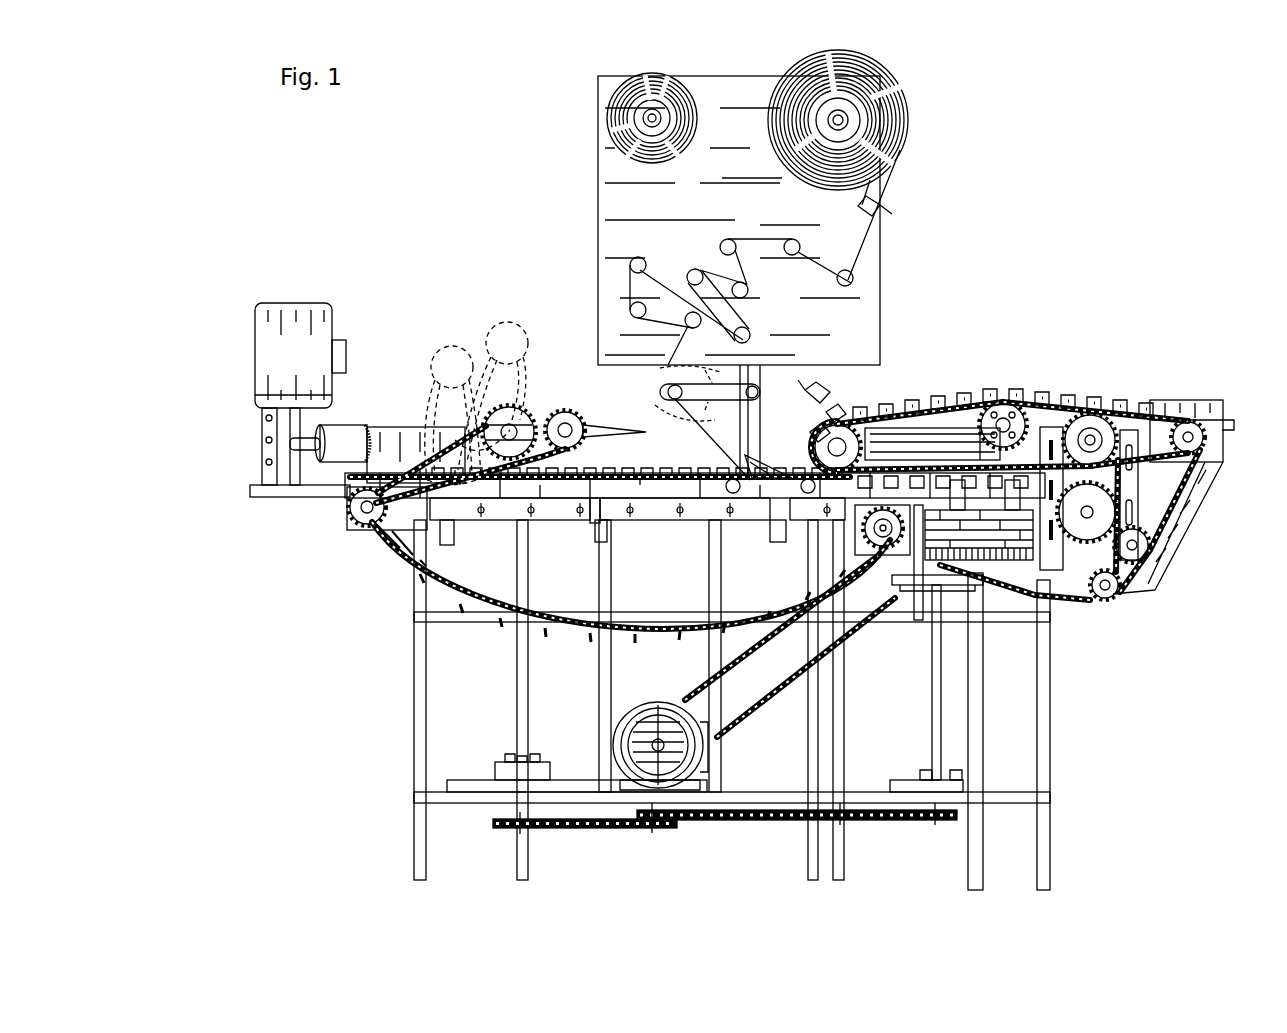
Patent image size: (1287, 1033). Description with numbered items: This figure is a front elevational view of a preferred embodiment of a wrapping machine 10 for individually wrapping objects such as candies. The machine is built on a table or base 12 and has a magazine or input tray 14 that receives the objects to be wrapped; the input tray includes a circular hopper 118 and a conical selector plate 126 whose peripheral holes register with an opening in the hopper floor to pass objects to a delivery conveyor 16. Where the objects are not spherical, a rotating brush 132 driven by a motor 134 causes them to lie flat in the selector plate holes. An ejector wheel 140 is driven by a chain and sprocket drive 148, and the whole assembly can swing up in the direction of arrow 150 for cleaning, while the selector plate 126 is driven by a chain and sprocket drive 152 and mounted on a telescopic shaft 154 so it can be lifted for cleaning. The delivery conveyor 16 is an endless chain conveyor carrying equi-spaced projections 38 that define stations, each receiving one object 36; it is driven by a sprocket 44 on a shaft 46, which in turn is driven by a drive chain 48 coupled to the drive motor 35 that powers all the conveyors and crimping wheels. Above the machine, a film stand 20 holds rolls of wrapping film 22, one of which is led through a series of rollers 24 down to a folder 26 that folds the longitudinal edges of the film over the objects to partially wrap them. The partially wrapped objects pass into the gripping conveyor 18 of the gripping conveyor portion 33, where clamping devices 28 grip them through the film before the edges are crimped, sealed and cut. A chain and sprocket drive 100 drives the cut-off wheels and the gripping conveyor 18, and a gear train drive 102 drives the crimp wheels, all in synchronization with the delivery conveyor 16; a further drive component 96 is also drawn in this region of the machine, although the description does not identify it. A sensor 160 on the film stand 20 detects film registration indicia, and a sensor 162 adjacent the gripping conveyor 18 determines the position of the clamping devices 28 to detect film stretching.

The wrapping machine 10 is at (1120, 212).
The table or base 12 is at (414, 736).
The input tray 14 is at (600, 413).
The delivery conveyor 16 is at (411, 563).
The gripping conveyor 18 is at (988, 382).
The film stand 20 is at (598, 160).
The rolls of wrapping film 22 is at (656, 74).
The rollers 24 is at (805, 245).
The folder 26 is at (762, 470).
The clamping devices 28 is at (948, 390).
The gripping conveyor portion 33 is at (1132, 328).
The drive motor 35 is at (674, 704).
The objects 36 is at (665, 476).
The projections 38 is at (606, 476).
The sprocket 44 is at (858, 529).
The shaft 46 is at (852, 566).
The drive chain 48 is at (747, 716).
The gear 96 is at (1073, 575).
The chain and sprocket drive 100 is at (1205, 528).
The gear train drive 102 is at (1013, 568).
The circular hopper 118 is at (410, 426).
The selector plate 126 is at (602, 416).
The rotating brush 132 is at (345, 423).
The motor 134 is at (255, 366).
The ejector wheel 140 is at (507, 405).
The chain and sprocket drive 148 is at (465, 529).
The arrow 150 is at (564, 400).
The chain and sprocket drive 152 is at (648, 846).
The telescopic shaft 154 is at (517, 699).
The sensor 160 is at (882, 212).
The sensor 162 is at (817, 402).